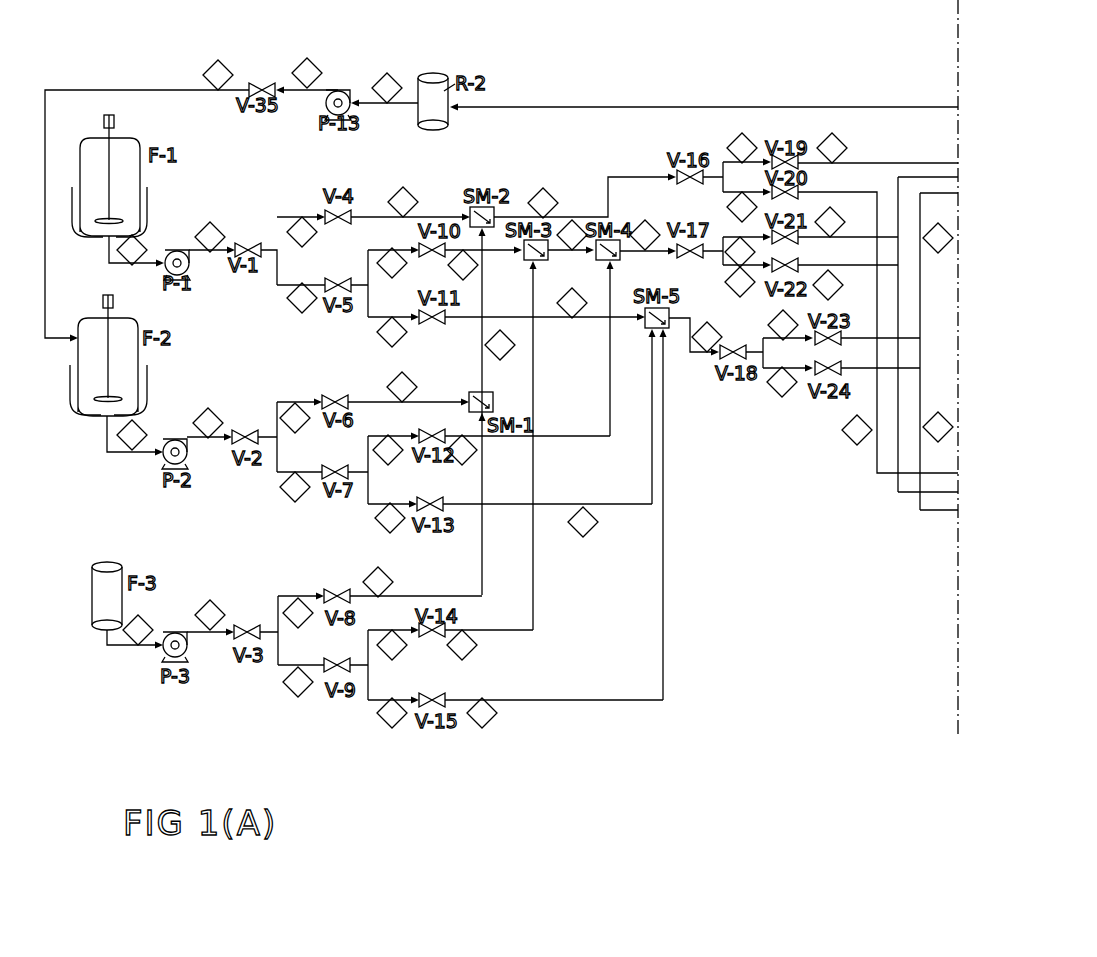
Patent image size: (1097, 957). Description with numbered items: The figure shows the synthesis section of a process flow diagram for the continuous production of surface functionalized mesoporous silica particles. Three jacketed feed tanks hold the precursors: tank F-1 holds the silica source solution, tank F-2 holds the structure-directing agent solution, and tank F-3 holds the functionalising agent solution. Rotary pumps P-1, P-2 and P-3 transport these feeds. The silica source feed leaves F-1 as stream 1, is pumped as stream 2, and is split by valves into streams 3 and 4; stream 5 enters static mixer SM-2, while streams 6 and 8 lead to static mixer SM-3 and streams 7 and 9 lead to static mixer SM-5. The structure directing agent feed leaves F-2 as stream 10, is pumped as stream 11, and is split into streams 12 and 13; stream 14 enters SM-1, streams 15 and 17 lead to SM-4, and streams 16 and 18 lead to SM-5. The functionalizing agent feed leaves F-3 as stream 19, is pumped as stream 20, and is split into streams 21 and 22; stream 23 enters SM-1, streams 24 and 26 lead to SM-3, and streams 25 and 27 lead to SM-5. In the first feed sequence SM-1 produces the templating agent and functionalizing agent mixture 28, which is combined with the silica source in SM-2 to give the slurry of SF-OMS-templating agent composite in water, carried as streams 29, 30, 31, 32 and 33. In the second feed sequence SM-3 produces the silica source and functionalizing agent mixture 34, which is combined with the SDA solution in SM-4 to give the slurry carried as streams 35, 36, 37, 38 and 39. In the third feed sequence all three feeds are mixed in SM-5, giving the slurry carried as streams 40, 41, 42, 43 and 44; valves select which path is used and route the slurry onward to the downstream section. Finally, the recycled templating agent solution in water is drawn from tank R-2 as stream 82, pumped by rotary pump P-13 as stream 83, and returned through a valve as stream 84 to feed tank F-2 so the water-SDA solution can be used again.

The silica source feed 1 is at (132, 250).
The silica source feed 2 is at (210, 237).
The silica source feed 3 is at (298, 226).
The silica source feed 4 is at (295, 306).
The silica source feed 5 is at (406, 197).
The silica source feed 6 is at (395, 269).
The silica source feed 7 is at (395, 337).
The silica source feed 8 is at (467, 270).
The silica source feed 9 is at (575, 300).
The structure directing agent feed 10 is at (136, 432).
The structure directing agent feed 11 is at (212, 421).
The structure directing agent feed 12 is at (291, 414).
The structure directing agent feed 13 is at (291, 491).
The structure directing agent feed 14 is at (406, 384).
The structure directing agent feed 15 is at (385, 454).
The structure directing agent feed 16 is at (386, 520).
The structure directing agent feed 17 is at (465, 455).
The structure directing agent feed 18 is at (586, 527).
The functionalizing agent feed 19 is at (141, 627).
The functionalizing agent feed 20 is at (214, 612).
The functionalizing agent feed 21 is at (298, 608).
The functionalizing agent feed 22 is at (294, 686).
The functionalizing agent feed 23 is at (382, 579).
The functionalizing agent feed 24 is at (394, 650).
The functionalizing agent feed 25 is at (388, 716).
The functionalizing agent feed 26 is at (466, 650).
The functionalizing agent feed 27 is at (485, 718).
The templating agent and functionalizing agent mixture 28 is at (500, 350).
The slurry of SF-OMS-templating agent composite in water 29 is at (546, 199).
The slurry of SF-OMS-templating agent composite in water 30 is at (738, 146).
The slurry of SF-OMS-templating agent composite in water 31 is at (738, 205).
The slurry of SF-OMS-templating agent composite in water 32 is at (836, 145).
The slurry of SF-OMS-templating agent composite in water 33 is at (853, 432).
The silica source and functionalizing agent mixture 34 is at (575, 231).
The slurry of SF-OMS-templating agent composite in water 35 is at (646, 231).
The slurry of SF-OMS-templating agent composite in water 36 is at (735, 257).
The slurry of SF-OMS-templating agent composite in water 37 is at (742, 287).
The slurry of SF-OMS-templating agent composite in water 38 is at (834, 219).
The slurry of SF-OMS-templating agent composite in water 39 is at (832, 290).
The slurry of SF-OMS-templating agent composite in water 40 is at (702, 341).
The slurry of SF-OMS-templating agent composite in water 41 is at (778, 328).
The slurry of SF-OMS-templating agent composite in water 42 is at (778, 386).
The slurry of SF-OMS-templating agent composite in water 43 is at (937, 243).
The slurry of SF-OMS-templating agent composite in water 44 is at (936, 422).
The recycled templating agent solution in water 82 is at (383, 84).
The recycled templating agent solution in water 83 is at (303, 70).
The recycled templating agent solution in water 84 is at (214, 72).